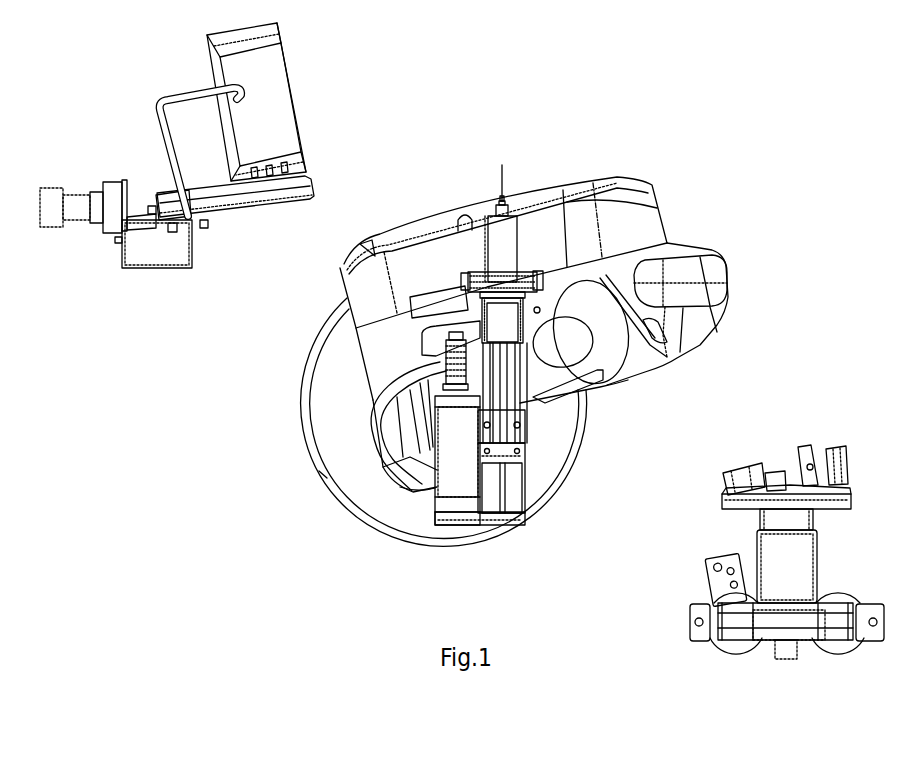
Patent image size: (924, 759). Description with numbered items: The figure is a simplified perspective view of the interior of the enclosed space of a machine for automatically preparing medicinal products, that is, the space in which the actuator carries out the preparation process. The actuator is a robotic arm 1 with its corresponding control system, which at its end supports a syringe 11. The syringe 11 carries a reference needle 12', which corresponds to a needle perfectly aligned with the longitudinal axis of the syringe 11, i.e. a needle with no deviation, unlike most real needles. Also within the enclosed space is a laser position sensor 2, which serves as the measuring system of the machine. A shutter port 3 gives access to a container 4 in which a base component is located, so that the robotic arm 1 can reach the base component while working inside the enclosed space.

The robotic arm 1 is at (714, 233).
The laser position sensor 2 is at (706, 558).
The shutter port 3 is at (314, 178).
The container 4 is at (281, 110).
The syringe 11 is at (500, 227).
The reference needle 12' is at (533, 172).